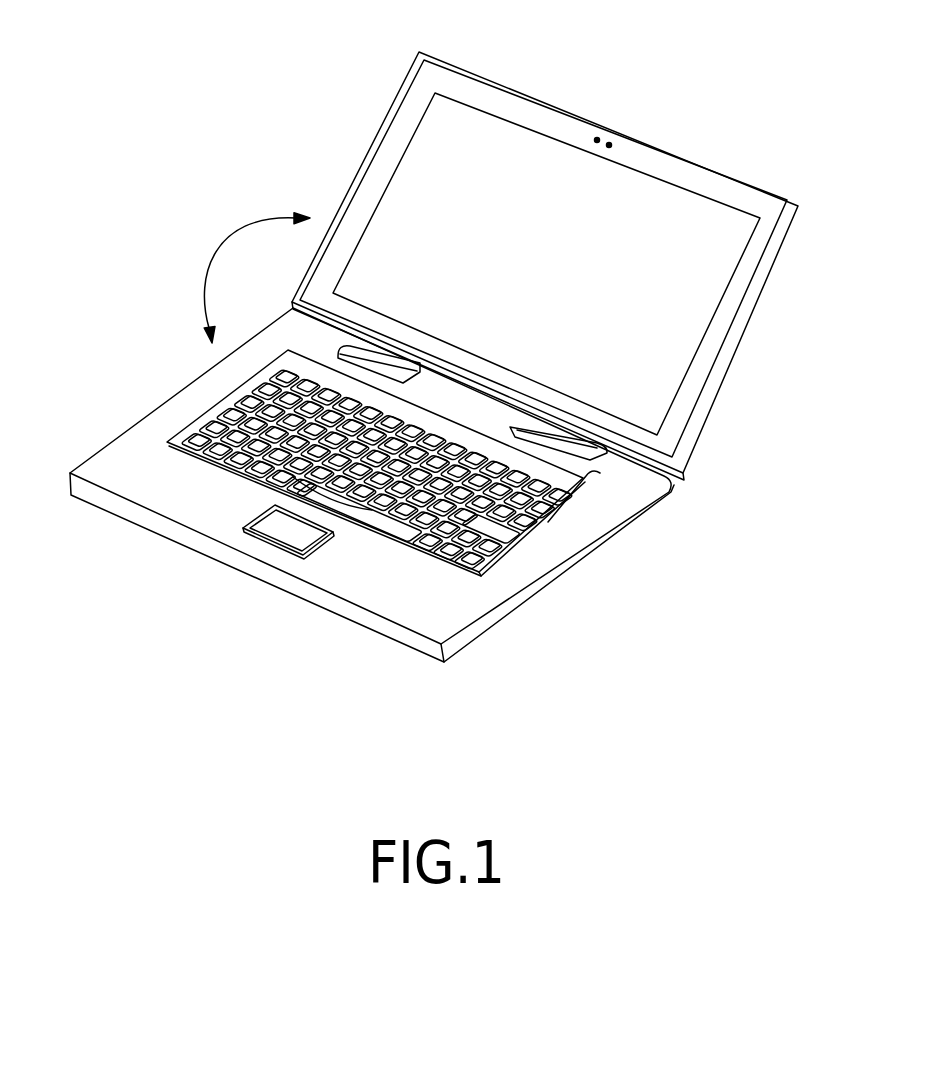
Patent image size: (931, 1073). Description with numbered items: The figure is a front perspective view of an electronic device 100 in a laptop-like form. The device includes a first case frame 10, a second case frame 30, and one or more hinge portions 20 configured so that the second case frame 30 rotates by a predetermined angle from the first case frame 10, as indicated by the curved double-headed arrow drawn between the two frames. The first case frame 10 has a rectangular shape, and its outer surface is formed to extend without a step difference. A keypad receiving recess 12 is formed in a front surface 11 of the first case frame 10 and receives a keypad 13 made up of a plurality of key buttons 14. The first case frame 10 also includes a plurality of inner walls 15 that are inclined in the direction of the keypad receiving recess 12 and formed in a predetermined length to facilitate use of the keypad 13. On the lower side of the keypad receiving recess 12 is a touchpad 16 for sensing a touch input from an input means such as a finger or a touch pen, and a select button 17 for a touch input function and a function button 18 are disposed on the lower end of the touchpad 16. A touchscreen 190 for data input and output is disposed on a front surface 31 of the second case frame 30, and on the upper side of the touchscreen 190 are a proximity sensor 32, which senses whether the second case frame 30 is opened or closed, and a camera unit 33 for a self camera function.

The electronic device 100 is at (109, 98).
The first case frame 10 is at (190, 366).
The front surface 11 is at (433, 606).
The keypad receiving recess 12 is at (496, 564).
The keypad 13 is at (194, 411).
The key buttons 14 is at (540, 503).
The inner walls 15 is at (600, 473).
The touchpad 16 is at (268, 512).
The select button 17 is at (256, 531).
The function button 18 is at (277, 553).
The hinge portions 20 is at (588, 432).
The second case frame 30 is at (362, 137).
The front surface 31 is at (493, 100).
The proximity sensor 32 is at (597, 140).
The camera unit 33 is at (609, 145).
The touchscreen 190 is at (700, 220).